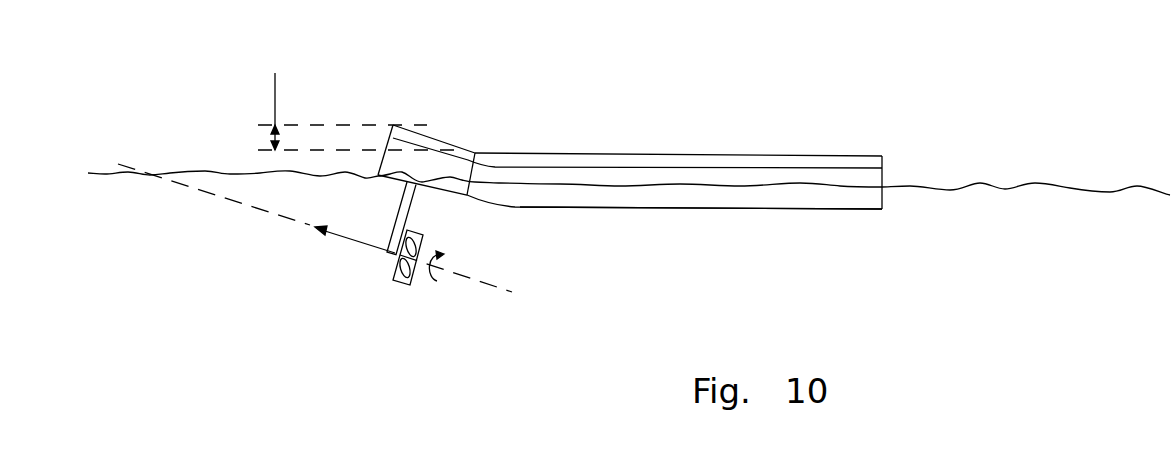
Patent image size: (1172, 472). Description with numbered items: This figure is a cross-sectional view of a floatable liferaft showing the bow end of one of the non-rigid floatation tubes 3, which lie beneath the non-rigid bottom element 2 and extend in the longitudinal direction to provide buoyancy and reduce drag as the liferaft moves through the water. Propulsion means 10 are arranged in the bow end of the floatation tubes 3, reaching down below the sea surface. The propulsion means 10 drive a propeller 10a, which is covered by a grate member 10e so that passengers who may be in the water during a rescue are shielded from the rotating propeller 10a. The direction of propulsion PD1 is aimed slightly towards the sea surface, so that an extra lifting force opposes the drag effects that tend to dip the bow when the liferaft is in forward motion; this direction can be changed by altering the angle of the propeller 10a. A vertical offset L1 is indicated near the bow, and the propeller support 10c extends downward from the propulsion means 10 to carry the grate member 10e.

The non-rigid bottom element 2 is at (830, 163).
The non-rigid floatation tubes 3 is at (860, 200).
The propulsion means 10 is at (453, 168).
The propeller 10a is at (418, 241).
The stem 10c is at (400, 213).
The grate member 10e is at (417, 287).
The propulsion direction PD1 is at (400, 213).
The distance L1 is at (348, 111).